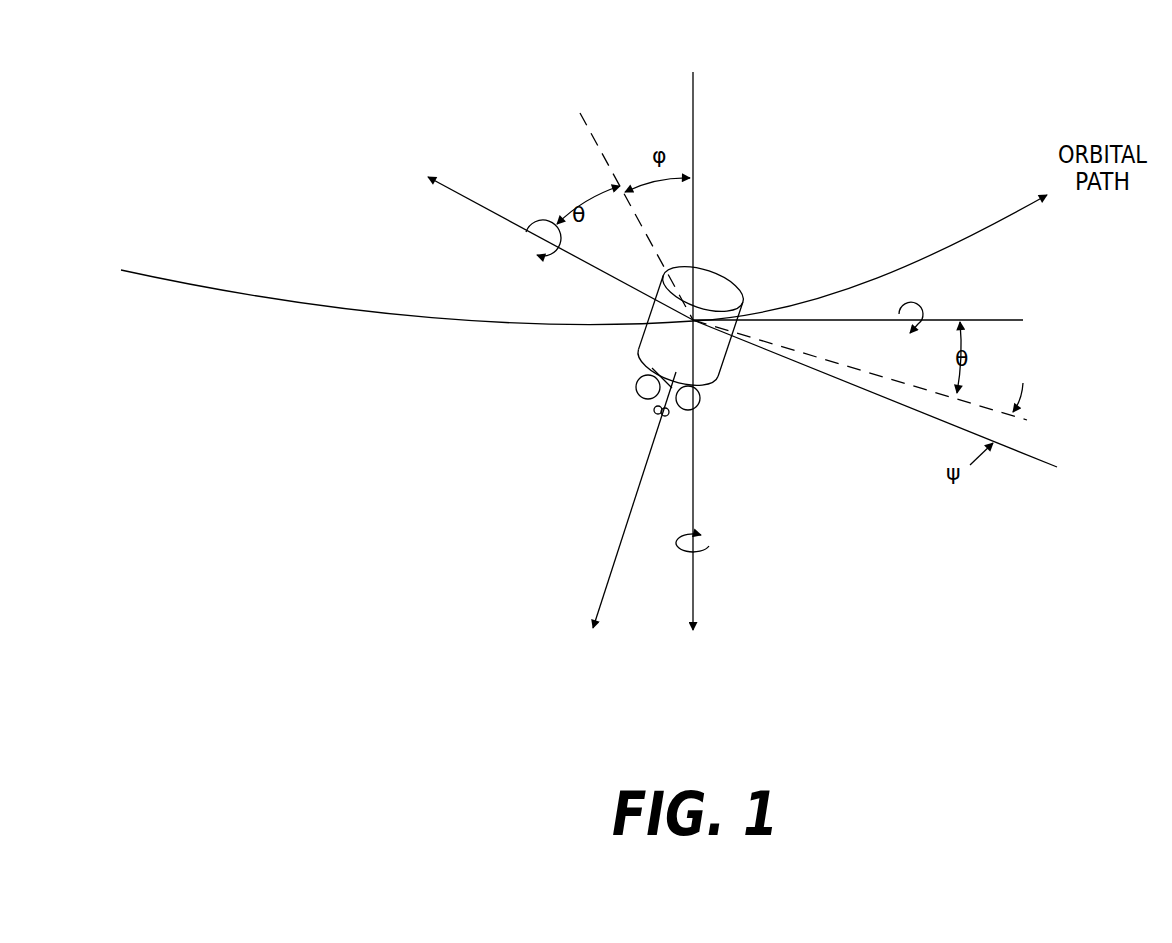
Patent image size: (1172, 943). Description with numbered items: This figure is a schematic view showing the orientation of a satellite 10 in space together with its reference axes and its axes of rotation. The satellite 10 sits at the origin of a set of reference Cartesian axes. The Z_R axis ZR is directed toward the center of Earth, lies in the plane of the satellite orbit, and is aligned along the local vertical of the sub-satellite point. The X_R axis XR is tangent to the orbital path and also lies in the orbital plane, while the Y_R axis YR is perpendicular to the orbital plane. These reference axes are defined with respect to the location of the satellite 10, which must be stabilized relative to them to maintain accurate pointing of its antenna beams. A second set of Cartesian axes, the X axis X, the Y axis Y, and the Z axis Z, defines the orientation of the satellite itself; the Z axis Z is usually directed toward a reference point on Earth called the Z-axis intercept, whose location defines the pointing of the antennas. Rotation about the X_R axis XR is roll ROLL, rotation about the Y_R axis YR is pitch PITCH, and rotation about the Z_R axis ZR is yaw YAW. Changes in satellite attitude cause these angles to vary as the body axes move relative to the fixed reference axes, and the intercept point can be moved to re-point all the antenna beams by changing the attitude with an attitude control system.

The satellite 10 is at (767, 266).
The Z axis Z is at (693, 177).
The Y_R axis YR is at (692, 502).
The X_R axis XR is at (878, 320).
The Z_R axis ZR is at (521, 215).
The X axis X is at (888, 401).
The Y axis Y is at (629, 514).
The yaw YAW is at (517, 249).
The roll ROLL is at (914, 333).
The pitch PITCH is at (730, 542).